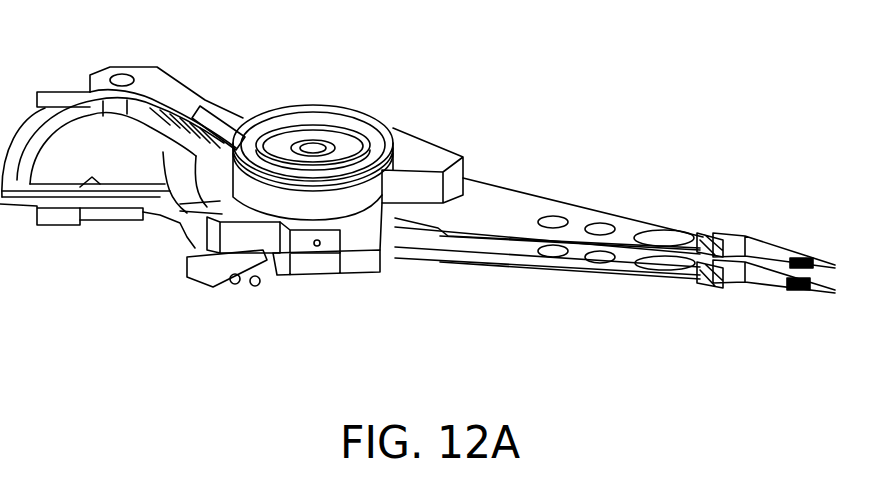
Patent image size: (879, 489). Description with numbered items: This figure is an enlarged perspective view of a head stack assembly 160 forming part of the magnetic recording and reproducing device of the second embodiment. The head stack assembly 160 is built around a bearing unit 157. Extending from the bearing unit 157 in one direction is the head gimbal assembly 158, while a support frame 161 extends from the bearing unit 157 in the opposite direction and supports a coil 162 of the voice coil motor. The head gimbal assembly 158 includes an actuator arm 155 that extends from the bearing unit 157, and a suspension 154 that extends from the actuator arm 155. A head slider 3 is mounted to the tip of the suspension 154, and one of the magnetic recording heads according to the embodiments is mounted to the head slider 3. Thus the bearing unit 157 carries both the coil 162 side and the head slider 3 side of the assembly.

The head slider 3 is at (806, 260).
The suspension 154 is at (770, 253).
The actuator arm 155 is at (627, 227).
The bearing unit 157 is at (330, 86).
The head gimbal assembly 158 is at (557, 186).
The head stack assembly 160 is at (521, 108).
The support frame 161 is at (158, 87).
The coil 162 is at (98, 180).